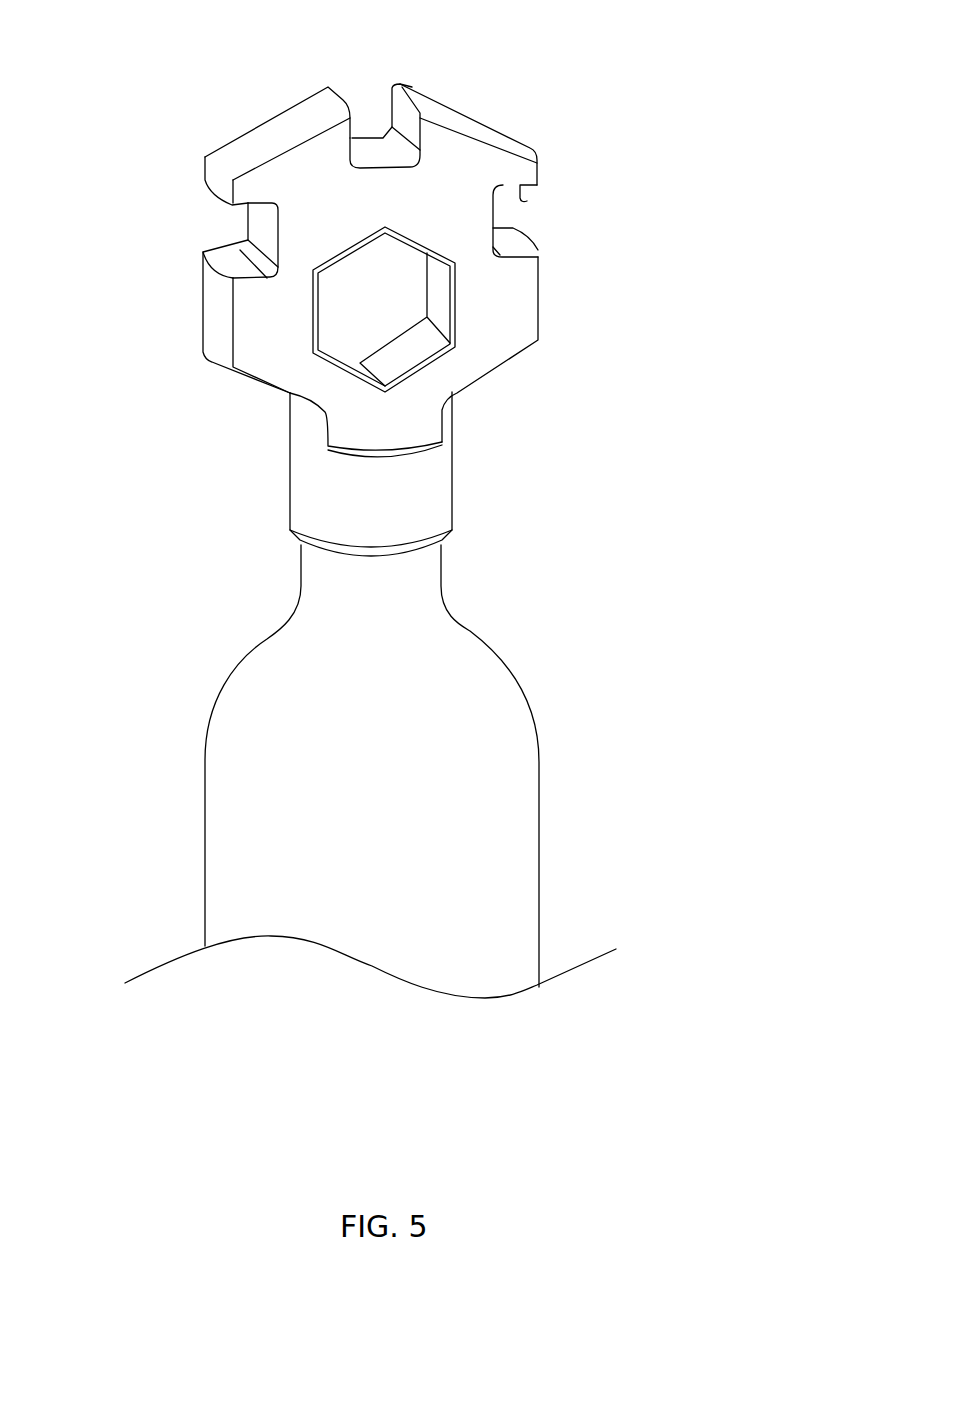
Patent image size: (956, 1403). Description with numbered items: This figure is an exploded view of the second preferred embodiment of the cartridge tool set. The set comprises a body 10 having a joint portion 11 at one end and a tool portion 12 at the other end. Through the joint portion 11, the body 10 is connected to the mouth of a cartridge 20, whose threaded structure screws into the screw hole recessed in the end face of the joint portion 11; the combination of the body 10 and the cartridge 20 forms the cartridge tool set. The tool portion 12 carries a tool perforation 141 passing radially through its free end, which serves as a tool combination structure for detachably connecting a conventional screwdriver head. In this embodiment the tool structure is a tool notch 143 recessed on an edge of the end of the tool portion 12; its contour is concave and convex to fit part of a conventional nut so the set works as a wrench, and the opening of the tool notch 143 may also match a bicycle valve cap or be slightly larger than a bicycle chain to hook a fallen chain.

The body 10 is at (670, 140).
The joint portion 11 is at (436, 487).
The tool portion 12 is at (473, 150).
The tool perforation 141 is at (343, 310).
The tool notch 143 is at (353, 138).
The cartridge 20 is at (541, 842).